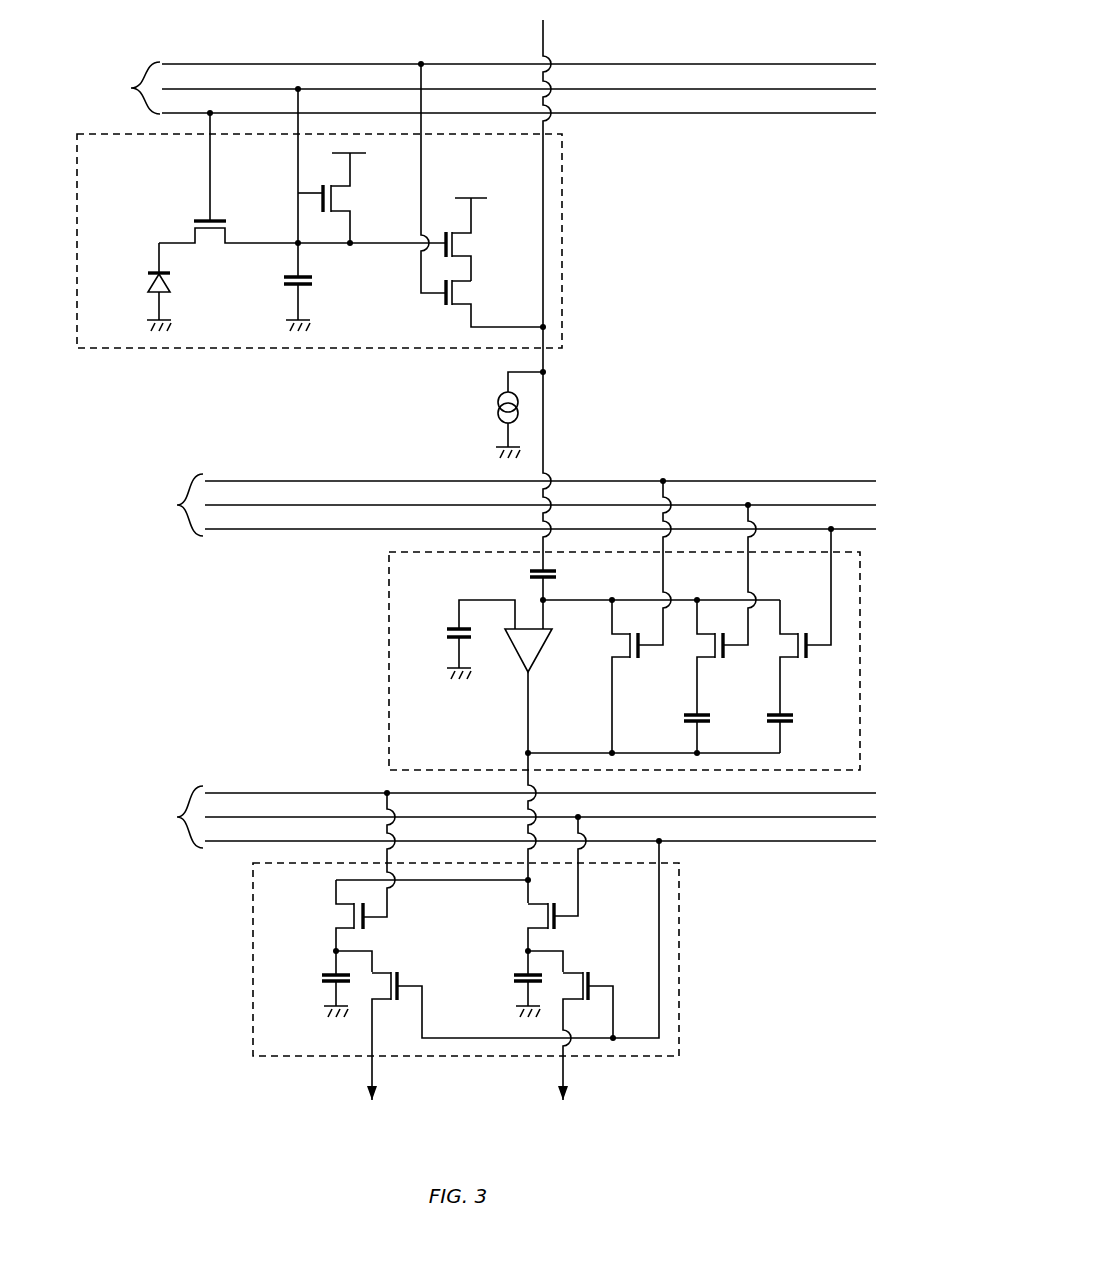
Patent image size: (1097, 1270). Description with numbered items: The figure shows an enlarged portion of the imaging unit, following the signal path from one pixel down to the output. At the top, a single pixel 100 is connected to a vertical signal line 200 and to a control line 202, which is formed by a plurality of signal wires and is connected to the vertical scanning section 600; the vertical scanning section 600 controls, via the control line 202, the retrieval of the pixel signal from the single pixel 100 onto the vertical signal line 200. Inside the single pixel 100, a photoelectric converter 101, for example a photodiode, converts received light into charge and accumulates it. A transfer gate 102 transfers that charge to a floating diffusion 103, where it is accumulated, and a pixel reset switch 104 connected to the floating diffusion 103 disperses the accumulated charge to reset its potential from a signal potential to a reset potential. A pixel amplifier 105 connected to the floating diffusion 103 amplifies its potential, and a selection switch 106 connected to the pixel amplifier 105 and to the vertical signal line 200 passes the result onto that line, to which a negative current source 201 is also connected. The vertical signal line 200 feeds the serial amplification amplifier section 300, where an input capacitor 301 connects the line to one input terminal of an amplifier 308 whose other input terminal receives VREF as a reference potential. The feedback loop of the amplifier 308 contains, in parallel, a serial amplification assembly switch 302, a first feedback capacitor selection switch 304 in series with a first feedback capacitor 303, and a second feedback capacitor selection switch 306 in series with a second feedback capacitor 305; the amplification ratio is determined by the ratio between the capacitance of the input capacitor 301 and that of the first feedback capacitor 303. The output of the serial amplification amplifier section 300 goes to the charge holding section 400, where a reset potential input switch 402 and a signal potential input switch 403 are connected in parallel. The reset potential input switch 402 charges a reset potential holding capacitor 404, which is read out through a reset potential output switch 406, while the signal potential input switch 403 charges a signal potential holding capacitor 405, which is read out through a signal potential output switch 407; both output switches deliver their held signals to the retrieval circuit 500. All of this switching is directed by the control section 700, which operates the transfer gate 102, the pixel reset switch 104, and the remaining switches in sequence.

The single pixel 100 is at (196, 349).
The photoelectric converter 101 is at (147, 280).
The transfer gate 102 is at (218, 263).
The floating diffusion 103 is at (312, 285).
The pixel reset switch 104 is at (375, 210).
The pixel amplifier 105 is at (470, 244).
The selection switch 106 is at (490, 302).
The vertical signal line 200 is at (543, 317).
The negative current source 201 is at (496, 408).
The control line 202 is at (667, 63).
The serial amplification amplifier section 300 is at (389, 712).
The input capacitor 301 is at (556, 575).
The serial amplification assembly switch 302 is at (635, 660).
The first feedback capacitor 303 is at (684, 718).
The first feedback capacitor selection switch 304 is at (720, 660).
The second feedback capacitor 305 is at (794, 718).
The second feedback capacitor selection switch 306 is at (803, 660).
The amplifier 308 is at (540, 655).
The charge holding section 400 is at (252, 1008).
The reset potential input switch 402 is at (312, 921).
The signal potential input switch 403 is at (505, 924).
The reset potential holding capacitor 404 is at (322, 980).
The signal potential holding capacitor 405 is at (514, 980).
The reset potential output switch 406 is at (392, 969).
The signal potential output switch 407 is at (585, 969).
The retrieval circuit 500 is at (467, 1109).
The vertical scanning section 600 is at (121, 88).
The control section 700 is at (167, 505).